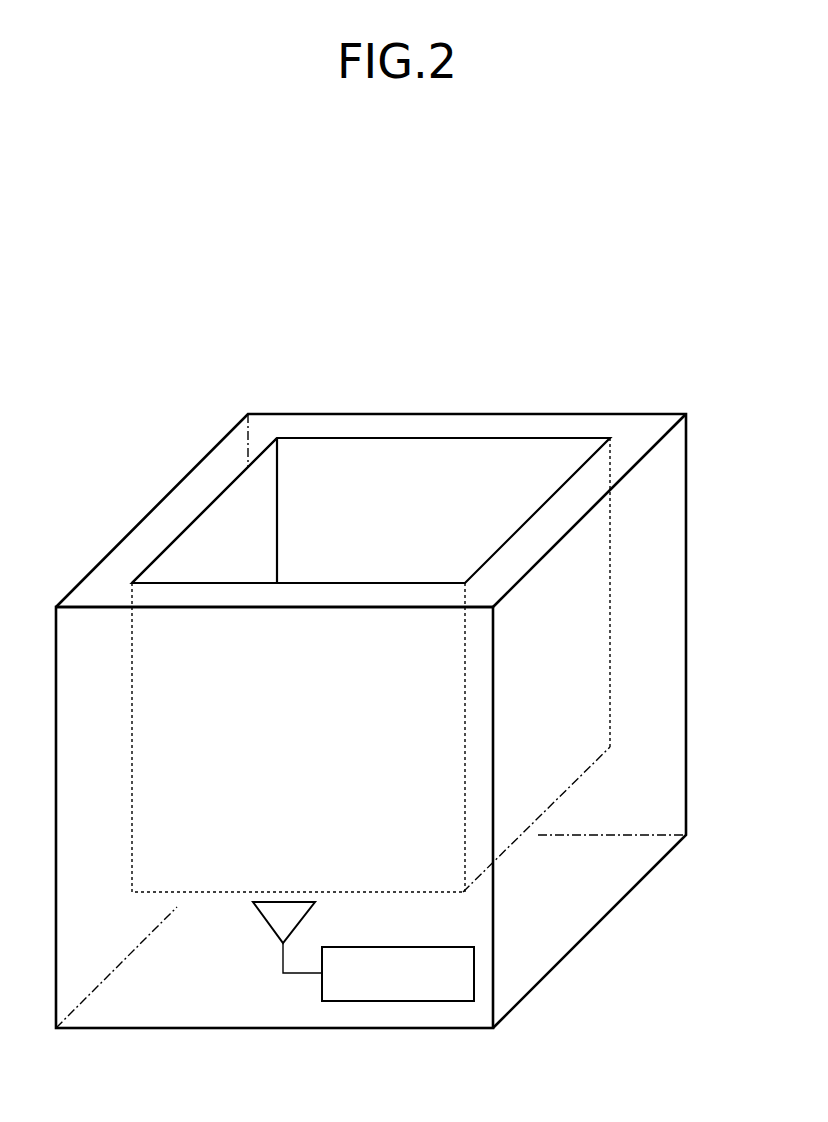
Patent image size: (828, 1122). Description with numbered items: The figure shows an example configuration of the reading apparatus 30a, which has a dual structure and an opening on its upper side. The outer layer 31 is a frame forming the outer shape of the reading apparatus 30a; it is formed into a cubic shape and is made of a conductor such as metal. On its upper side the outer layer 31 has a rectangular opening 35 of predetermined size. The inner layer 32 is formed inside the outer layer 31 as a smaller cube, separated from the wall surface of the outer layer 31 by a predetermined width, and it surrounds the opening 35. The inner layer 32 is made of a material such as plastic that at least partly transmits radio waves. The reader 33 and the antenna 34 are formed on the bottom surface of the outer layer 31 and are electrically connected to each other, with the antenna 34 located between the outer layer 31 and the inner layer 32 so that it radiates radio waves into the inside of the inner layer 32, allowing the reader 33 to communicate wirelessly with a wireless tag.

The reading apparatus 30a is at (399, 330).
The outer layer 31 is at (467, 414).
The inner layer 32 is at (537, 438).
The reader 33 is at (398, 947).
The antenna 34 is at (273, 931).
The opening 35 is at (323, 431).